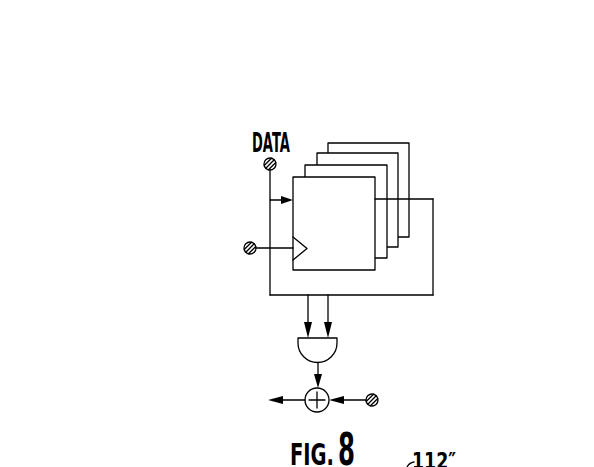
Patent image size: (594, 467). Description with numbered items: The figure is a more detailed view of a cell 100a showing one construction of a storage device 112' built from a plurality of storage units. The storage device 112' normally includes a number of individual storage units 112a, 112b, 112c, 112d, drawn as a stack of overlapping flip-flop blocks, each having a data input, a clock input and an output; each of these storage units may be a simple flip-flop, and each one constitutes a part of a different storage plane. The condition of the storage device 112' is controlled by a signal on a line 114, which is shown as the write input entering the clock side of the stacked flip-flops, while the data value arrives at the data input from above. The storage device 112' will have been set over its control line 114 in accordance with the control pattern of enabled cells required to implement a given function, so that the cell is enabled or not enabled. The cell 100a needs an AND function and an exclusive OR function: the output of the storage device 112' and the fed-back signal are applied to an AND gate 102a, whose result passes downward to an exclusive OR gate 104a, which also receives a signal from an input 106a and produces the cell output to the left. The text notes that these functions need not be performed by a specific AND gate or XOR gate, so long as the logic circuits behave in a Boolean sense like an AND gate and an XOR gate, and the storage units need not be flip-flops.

The cell 100a is at (172, 142).
The storage device 112' is at (395, 152).
The storage unit 112a is at (377, 194).
The storage unit 112b is at (401, 190).
The storage unit 112c is at (404, 172).
The storage unit 112d is at (409, 143).
The line 114 is at (247, 242).
The AND gate 102a is at (335, 342).
The exclusive OR gate 104a is at (325, 392).
The input 106a is at (377, 396).